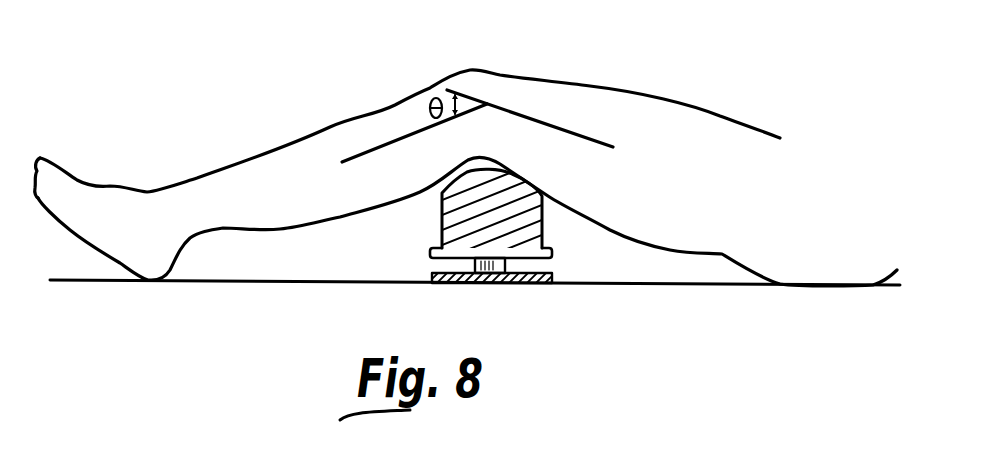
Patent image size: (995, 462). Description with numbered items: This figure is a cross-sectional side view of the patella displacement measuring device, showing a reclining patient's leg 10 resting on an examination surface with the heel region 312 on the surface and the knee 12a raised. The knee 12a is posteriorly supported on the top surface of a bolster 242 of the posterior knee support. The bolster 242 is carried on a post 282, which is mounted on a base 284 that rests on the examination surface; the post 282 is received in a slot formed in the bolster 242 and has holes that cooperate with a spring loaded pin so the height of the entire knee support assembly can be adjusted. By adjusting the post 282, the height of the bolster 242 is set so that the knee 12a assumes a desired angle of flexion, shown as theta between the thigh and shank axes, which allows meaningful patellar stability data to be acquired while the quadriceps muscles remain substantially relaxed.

The leg of patient 10 is at (688, 134).
The knee 12a is at (488, 84).
The heel support surface 312 is at (220, 280).
The bolster 242 is at (440, 218).
The base 284 is at (433, 275).
The post 282 is at (507, 267).